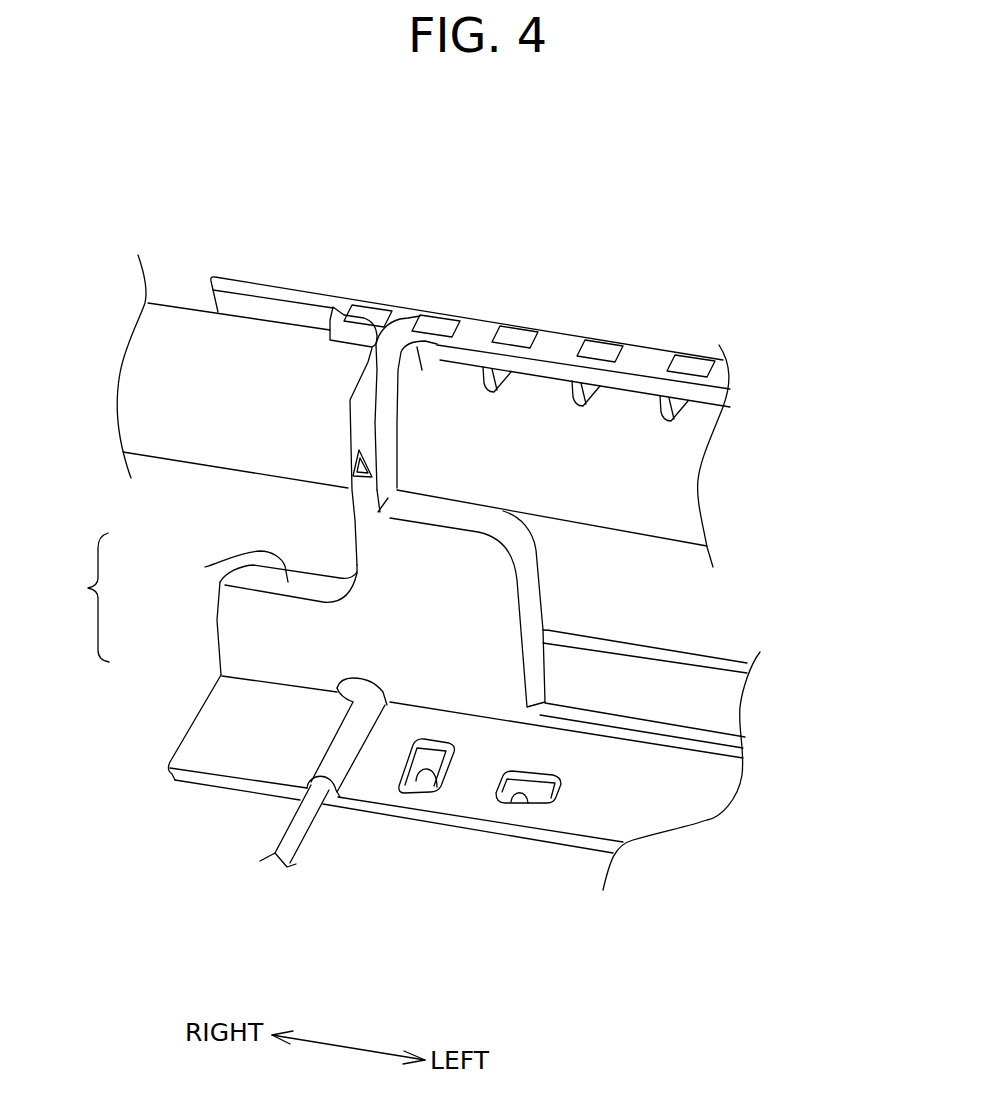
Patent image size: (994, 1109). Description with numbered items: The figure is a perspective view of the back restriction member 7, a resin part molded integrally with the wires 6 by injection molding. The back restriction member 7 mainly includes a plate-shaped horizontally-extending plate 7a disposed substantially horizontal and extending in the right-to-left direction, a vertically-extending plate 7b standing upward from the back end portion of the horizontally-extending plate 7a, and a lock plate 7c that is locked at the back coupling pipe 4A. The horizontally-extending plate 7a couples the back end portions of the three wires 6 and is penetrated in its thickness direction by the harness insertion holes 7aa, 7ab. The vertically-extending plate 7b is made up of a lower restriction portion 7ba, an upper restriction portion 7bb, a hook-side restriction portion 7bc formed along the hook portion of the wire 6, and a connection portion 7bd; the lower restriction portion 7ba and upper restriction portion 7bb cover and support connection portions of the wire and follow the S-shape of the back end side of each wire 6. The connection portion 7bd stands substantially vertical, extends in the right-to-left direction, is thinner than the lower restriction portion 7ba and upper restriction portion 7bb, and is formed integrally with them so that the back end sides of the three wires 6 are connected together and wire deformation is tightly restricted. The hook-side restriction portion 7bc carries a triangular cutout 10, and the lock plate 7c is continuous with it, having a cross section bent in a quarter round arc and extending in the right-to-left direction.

The back restriction member 7 is at (222, 207).
The horizontally-extending plate 7a is at (217, 720).
The harness insertion hole 7aa is at (420, 792).
The harness insertion hole 7ab is at (503, 803).
The vertically-extending plate 7b is at (78, 597).
The lower restriction portion 7ba is at (205, 567).
The upper restriction portion 7bb is at (488, 523).
The hook-side restriction portion 7bc is at (357, 395).
The connection portion 7bd is at (713, 687).
The lock plate 7c is at (572, 345).
The triangular cutout 10 is at (350, 467).
The back coupling pipe 4A is at (680, 470).
The wire 6 is at (290, 829).